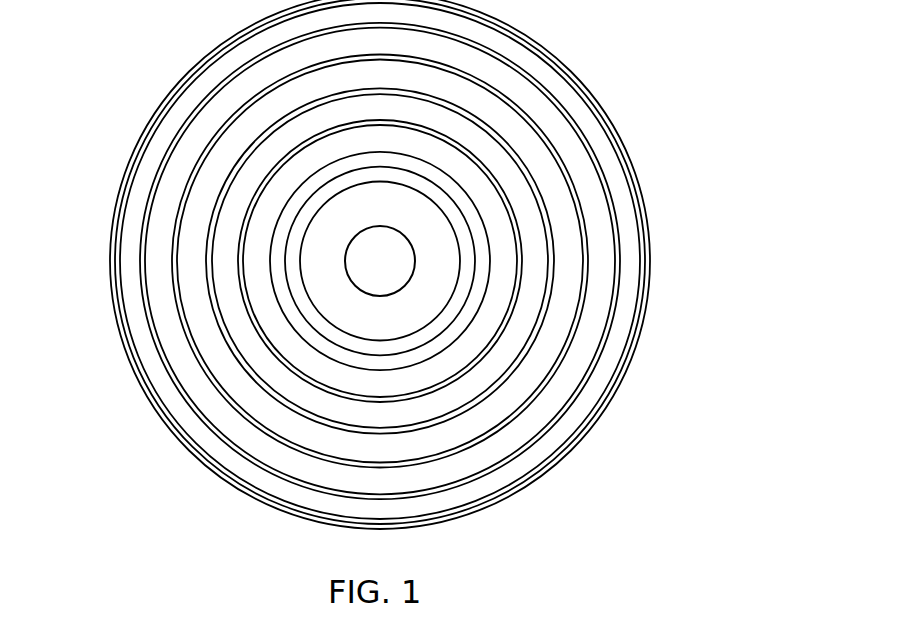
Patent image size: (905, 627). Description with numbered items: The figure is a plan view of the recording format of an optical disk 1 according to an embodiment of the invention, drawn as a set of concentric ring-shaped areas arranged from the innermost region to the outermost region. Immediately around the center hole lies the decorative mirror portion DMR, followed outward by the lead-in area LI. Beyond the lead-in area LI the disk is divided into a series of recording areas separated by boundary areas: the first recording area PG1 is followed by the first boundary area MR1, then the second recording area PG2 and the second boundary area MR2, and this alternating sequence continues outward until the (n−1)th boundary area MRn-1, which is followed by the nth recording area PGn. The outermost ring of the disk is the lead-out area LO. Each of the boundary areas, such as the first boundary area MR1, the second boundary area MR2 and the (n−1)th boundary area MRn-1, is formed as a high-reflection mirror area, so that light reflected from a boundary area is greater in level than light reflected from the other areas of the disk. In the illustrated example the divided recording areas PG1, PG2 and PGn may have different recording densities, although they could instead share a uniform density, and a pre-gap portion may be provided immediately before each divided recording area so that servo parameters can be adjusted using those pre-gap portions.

The optical disk 1 is at (405, 274).
The lead-in area LI is at (283, 230).
The decorative mirror portion DMR is at (293, 280).
The first recording area PG1 is at (427, 143).
The first boundary area MR1 is at (477, 153).
The second recording area PG2 is at (515, 183).
The second boundary area MR2 is at (552, 236).
The (n−1)th boundary area MRn-1 is at (613, 285).
The nth recording area PGn is at (605, 355).
The lead-out area LO is at (590, 428).